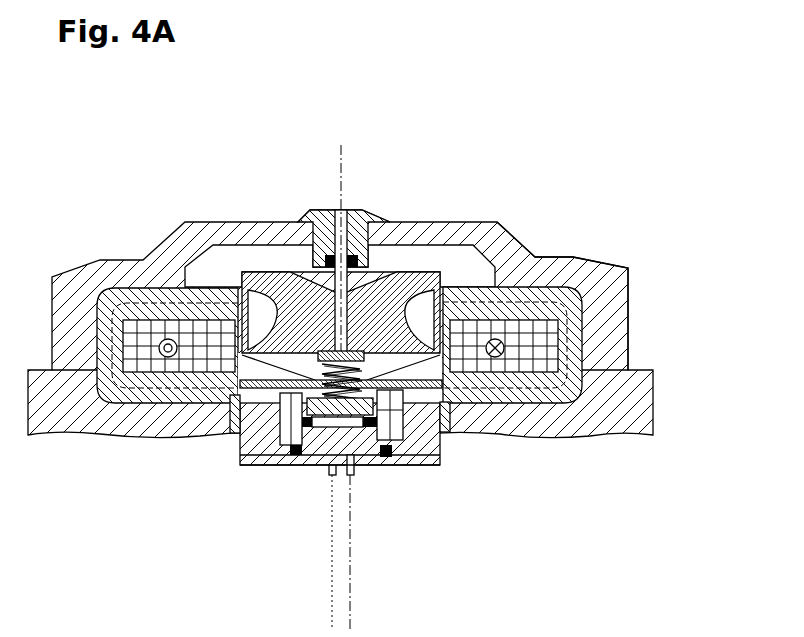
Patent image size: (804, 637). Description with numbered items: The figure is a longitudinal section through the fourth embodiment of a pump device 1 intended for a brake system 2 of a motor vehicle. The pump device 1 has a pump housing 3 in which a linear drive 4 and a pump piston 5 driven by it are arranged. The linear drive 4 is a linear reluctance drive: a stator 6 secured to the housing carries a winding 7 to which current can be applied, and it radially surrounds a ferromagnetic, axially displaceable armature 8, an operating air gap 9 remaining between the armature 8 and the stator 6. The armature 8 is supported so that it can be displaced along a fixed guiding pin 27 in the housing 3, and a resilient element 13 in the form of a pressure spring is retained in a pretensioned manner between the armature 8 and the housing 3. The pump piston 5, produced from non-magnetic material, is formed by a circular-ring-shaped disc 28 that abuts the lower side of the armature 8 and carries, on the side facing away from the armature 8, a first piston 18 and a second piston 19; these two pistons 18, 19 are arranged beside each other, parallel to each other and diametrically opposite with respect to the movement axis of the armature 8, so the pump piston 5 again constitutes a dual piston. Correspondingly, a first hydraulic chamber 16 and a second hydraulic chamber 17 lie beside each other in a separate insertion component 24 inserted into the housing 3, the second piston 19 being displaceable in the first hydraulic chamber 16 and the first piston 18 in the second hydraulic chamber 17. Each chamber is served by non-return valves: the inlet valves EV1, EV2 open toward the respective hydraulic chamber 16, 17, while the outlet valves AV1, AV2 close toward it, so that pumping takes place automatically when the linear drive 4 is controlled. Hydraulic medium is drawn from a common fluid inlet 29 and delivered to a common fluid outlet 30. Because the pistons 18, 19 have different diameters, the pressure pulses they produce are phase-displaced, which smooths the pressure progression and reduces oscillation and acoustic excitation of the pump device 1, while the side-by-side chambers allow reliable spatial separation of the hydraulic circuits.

The pump device 1 is at (91, 193).
The brake system 2 is at (599, 221).
The pump housing 3 is at (466, 228).
The linear drive 4 is at (233, 287).
The pump piston 5 is at (237, 396).
The stator 6 is at (548, 403).
The winding 7 is at (495, 358).
The armature 8 is at (262, 278).
The operating air gap 9 is at (236, 272).
The resilient element 13 is at (233, 401).
The first hydraulic chamber 16 is at (400, 467).
The second hydraulic chamber 17 is at (285, 467).
The first piston 18 is at (260, 467).
The second piston 19 is at (423, 465).
The insertion component 24 is at (232, 455).
The guiding pin 27 is at (348, 287).
The disc 28 is at (240, 400).
The common fluid inlet 29 is at (322, 488).
The common fluid outlet 30 is at (355, 488).
The first outlet valve AV1 is at (289, 467).
The first inlet valve EV1 is at (303, 467).
The second outlet valve AV2 is at (392, 467).
The second inlet valve EV2 is at (418, 467).